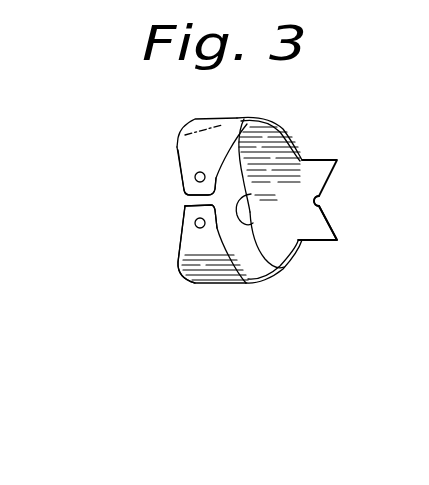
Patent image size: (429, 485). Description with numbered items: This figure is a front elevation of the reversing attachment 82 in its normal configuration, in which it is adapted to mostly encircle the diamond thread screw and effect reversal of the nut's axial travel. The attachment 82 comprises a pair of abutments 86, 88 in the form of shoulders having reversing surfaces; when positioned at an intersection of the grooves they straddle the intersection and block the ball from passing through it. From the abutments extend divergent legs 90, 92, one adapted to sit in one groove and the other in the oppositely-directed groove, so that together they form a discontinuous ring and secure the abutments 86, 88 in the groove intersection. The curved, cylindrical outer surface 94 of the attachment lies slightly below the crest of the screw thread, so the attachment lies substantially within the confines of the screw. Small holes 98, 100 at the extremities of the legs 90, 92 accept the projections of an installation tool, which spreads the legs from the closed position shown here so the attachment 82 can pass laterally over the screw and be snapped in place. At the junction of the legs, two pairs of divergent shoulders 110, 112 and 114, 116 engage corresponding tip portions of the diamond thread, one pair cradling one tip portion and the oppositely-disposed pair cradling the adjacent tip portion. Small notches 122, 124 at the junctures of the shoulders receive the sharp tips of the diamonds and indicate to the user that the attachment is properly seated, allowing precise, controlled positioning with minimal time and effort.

The reversing attachment 82 is at (189, 301).
The abutment 86 is at (177, 162).
The abutment 88 is at (181, 237).
The leg 90 is at (202, 147).
The leg 92 is at (197, 253).
The curved cylindrical outer surface 94 is at (218, 112).
The small hole 98 is at (196, 178).
The small hole 100 is at (196, 222).
The divergent shoulder 110 is at (335, 173).
The divergent shoulder 112 is at (333, 228).
The divergent shoulder 114 is at (240, 167).
The divergent shoulder 116 is at (238, 237).
The small notch 122 is at (321, 200).
The small notch 124 is at (253, 198).